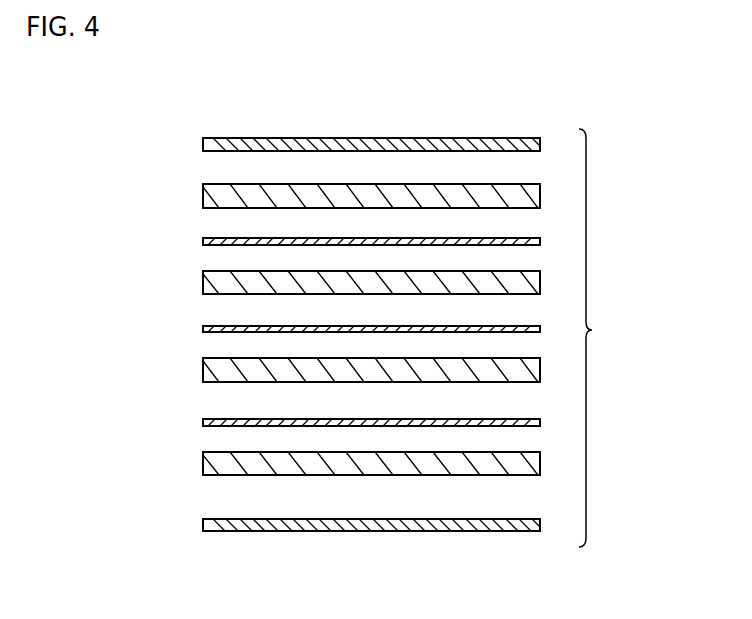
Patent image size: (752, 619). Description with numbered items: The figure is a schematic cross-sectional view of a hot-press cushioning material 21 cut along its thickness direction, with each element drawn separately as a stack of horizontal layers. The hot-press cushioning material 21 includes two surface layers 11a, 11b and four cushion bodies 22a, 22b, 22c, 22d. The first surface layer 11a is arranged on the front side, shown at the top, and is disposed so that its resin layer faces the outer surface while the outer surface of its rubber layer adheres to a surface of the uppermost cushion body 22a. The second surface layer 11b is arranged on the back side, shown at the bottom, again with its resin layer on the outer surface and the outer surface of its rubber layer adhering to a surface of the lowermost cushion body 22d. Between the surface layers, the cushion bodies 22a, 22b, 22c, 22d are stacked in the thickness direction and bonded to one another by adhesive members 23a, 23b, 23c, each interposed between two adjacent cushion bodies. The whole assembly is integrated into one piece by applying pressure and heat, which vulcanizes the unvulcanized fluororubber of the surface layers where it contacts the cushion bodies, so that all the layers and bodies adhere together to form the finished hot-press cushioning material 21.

The first surface layer 11a is at (210, 144).
The second surface layer 11b is at (210, 525).
The cushion body 22a is at (210, 194).
The cushion body 22b is at (210, 281).
The cushion body 22c is at (210, 368).
The cushion body 22d is at (210, 462).
The adhesive member 23a is at (210, 241).
The adhesive member 23b is at (210, 329).
The adhesive member 23c is at (210, 422).
The hot-press cushioning material 21 is at (625, 343).